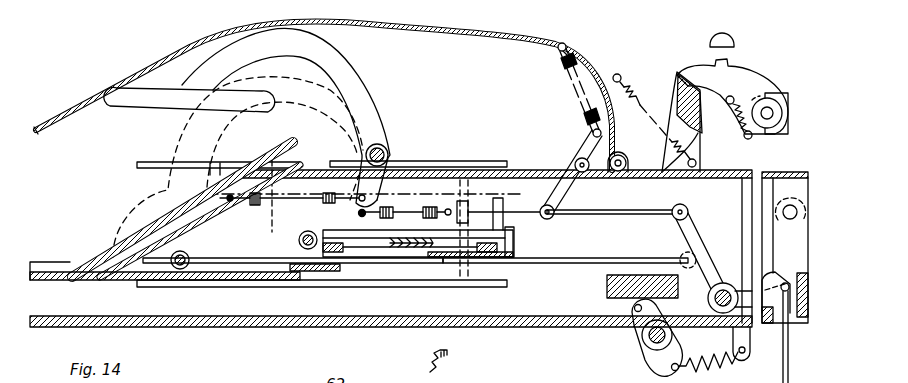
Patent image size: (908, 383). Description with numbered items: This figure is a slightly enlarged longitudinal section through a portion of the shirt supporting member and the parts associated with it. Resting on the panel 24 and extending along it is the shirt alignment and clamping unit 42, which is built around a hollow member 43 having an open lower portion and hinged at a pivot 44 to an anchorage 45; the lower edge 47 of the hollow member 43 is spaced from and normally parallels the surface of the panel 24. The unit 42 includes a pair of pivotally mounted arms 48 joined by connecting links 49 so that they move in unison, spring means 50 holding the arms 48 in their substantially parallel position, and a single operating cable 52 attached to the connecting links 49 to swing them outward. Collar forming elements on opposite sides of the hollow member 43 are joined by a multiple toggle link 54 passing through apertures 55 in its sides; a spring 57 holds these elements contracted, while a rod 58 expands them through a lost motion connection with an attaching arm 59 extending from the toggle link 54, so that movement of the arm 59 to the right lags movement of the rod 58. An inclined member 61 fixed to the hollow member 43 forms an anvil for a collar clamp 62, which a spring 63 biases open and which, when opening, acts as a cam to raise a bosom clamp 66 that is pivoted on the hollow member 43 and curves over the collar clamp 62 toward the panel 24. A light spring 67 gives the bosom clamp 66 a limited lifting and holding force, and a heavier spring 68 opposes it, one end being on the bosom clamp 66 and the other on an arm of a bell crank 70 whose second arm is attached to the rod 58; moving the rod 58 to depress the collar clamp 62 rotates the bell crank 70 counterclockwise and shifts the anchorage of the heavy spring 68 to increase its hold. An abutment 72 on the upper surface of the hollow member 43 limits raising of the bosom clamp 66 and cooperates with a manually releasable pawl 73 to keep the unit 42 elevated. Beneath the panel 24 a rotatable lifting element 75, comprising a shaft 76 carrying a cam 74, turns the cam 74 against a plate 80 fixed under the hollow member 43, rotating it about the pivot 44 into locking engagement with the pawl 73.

The panel 24 is at (287, 320).
The shirt alignment and clamping unit 42 is at (104, 170).
The hollow member 43 is at (723, 173).
The pivot 44 is at (790, 220).
The anchorage 45 is at (790, 173).
The lower edge 47 is at (518, 280).
The pivotally mounted arms 48 is at (38, 268).
The connecting links 49 is at (233, 258).
The spring means 50 is at (182, 253).
The operating cable 52 is at (623, 261).
The multiple toggle link 54 is at (370, 241).
The apertures 55 is at (514, 235).
The spring 57 is at (304, 233).
The rod 58 is at (628, 212).
The attaching arm 59 is at (503, 199).
The inclined member 61 is at (157, 223).
The collar clamp 62 is at (353, 70).
The spring 63 is at (273, 206).
The bosom clamp 66 is at (88, 100).
The light spring 67 is at (628, 90).
The heavy spring 68 is at (562, 63).
The bell crank 70 is at (572, 158).
The abutment 72 is at (677, 104).
The manually releasable pawl 73 is at (733, 80).
The cam 74 is at (638, 312).
The rotatable lifting element 75 is at (652, 348).
The shaft 76 is at (654, 342).
The plate 80 is at (607, 284).